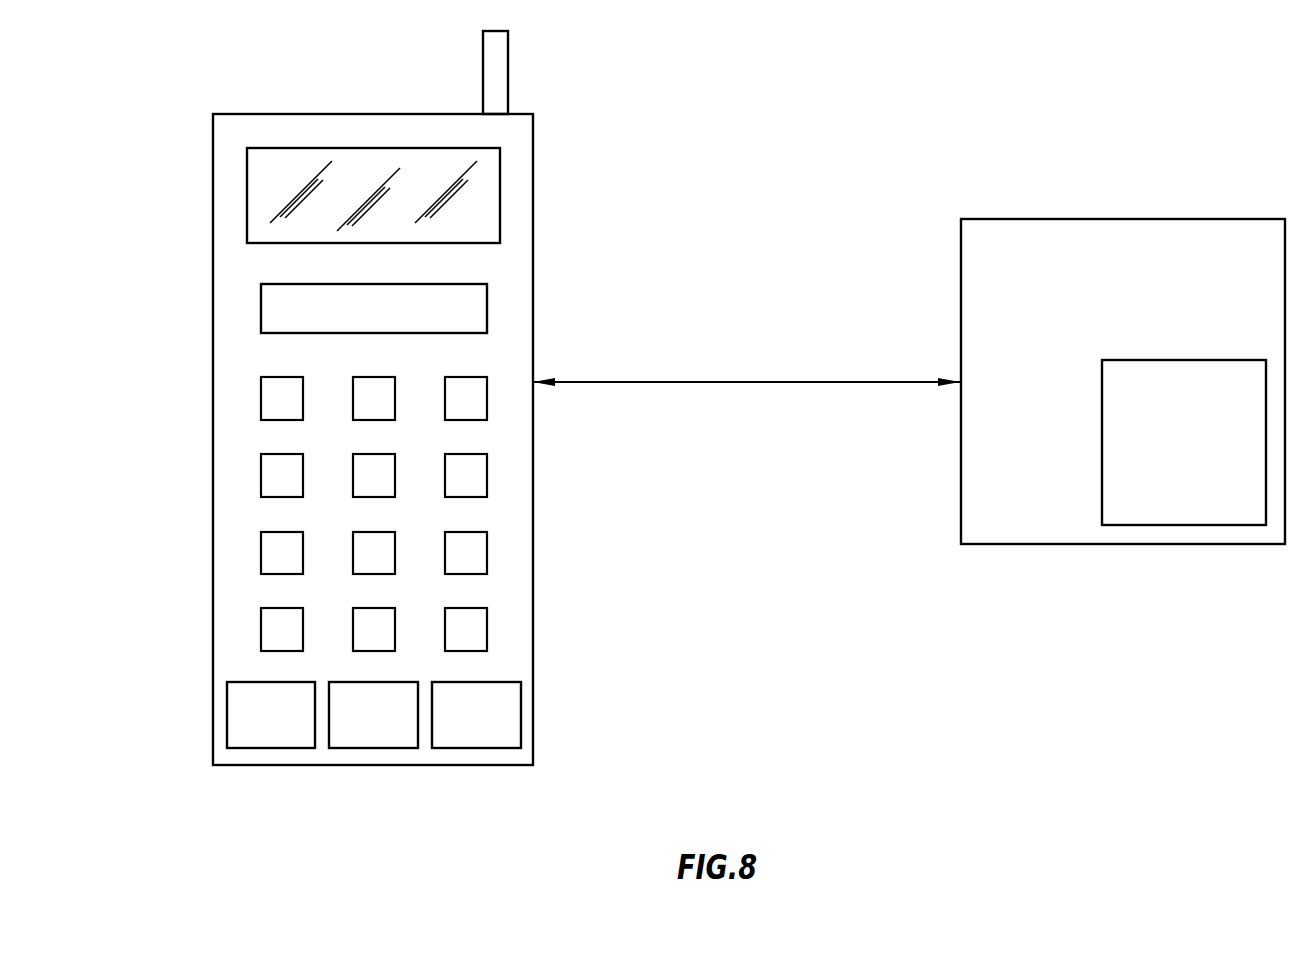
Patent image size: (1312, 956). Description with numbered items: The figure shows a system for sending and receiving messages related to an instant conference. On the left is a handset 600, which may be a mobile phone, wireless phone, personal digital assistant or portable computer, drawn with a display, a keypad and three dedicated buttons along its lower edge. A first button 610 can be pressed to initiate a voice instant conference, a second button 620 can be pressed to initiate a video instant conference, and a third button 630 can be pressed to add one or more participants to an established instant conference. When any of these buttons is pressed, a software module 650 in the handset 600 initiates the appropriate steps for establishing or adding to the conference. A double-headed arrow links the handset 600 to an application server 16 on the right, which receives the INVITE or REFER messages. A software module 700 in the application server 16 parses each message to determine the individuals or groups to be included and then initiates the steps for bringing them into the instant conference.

The handset 600 is at (335, 114).
The software module 650 is at (261, 307).
The button 610 is at (272, 748).
The button 620 is at (377, 748).
The button 630 is at (480, 748).
The application server 16 is at (1084, 219).
The software module 700 is at (1102, 383).